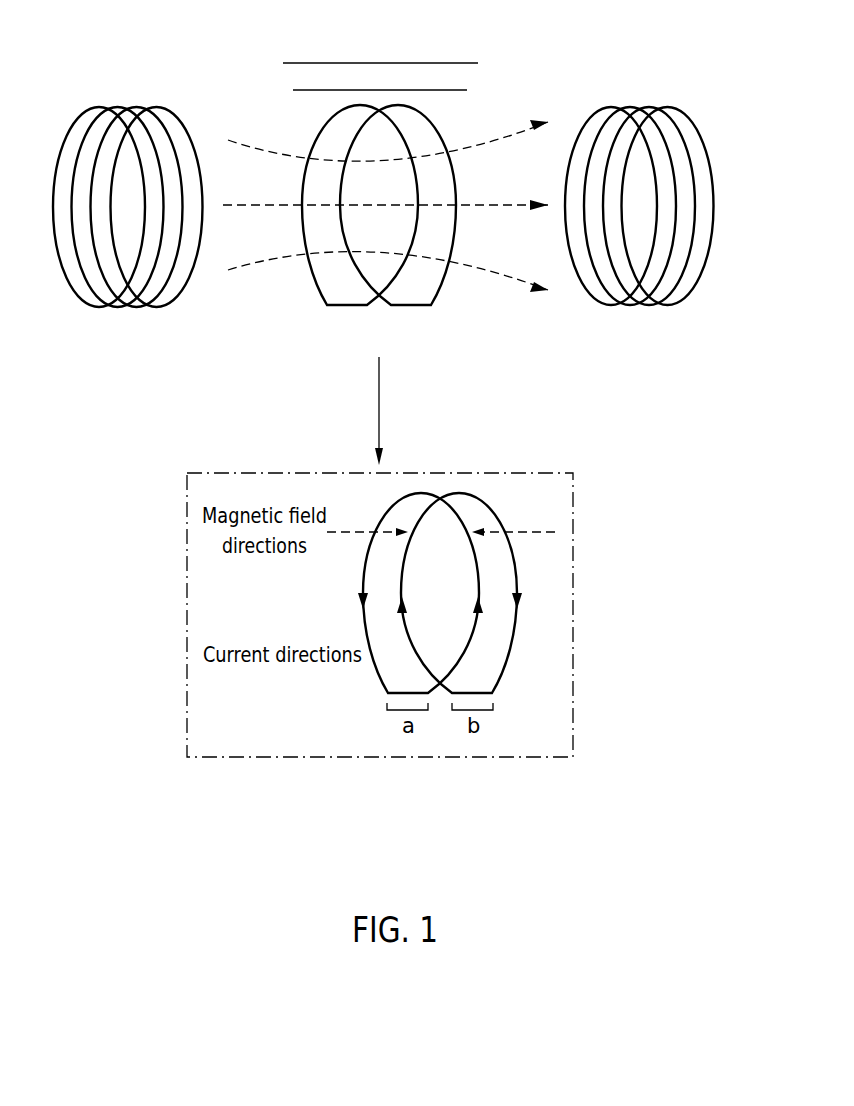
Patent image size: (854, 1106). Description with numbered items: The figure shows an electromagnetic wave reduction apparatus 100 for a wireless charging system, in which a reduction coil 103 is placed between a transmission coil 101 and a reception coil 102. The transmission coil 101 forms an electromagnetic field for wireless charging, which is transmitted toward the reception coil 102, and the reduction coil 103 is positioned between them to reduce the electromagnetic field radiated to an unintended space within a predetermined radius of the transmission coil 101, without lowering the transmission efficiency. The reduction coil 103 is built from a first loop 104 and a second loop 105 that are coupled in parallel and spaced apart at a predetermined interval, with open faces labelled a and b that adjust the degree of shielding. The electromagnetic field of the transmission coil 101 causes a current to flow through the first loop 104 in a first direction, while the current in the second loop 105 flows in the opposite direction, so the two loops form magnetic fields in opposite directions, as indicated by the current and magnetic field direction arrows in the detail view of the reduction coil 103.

The electromagnetic wave reduction apparatus 100 is at (478, 40).
The transmission coil 101 is at (180, 108).
The reception coil 102 is at (685, 110).
The reduction coil 103 is at (380, 245).
The first loop 104 is at (302, 230).
The second loop 105 is at (457, 230).